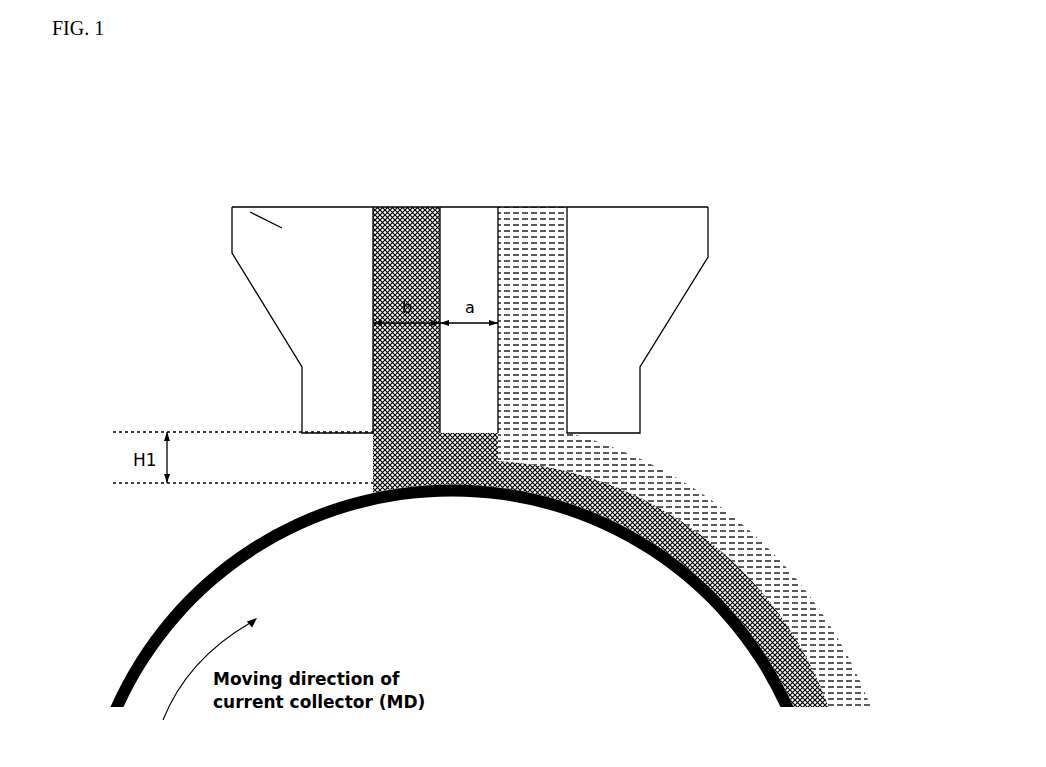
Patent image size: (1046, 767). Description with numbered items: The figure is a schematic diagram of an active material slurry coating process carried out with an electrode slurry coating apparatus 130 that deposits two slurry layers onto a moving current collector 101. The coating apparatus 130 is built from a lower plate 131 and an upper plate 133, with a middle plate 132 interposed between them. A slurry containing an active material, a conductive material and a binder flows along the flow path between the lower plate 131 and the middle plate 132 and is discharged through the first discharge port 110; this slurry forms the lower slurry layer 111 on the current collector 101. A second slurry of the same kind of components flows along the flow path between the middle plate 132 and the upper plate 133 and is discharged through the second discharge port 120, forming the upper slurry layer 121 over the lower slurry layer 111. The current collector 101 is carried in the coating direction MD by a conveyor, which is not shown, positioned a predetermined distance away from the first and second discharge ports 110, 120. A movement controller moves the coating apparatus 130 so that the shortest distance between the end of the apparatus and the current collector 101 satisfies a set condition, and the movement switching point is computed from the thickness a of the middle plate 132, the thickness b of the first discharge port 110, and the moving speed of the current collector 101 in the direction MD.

The current collector 101 is at (638, 560).
The first discharge port 110 is at (410, 456).
The lower slurry layer 111 is at (715, 588).
The second discharge port 120 is at (537, 460).
The upper slurry layer 121 is at (668, 500).
The slot die 130 is at (438, 269).
The lower plate 131 is at (230, 206).
The middle plate 132 is at (462, 242).
The upper plate 133 is at (667, 238).